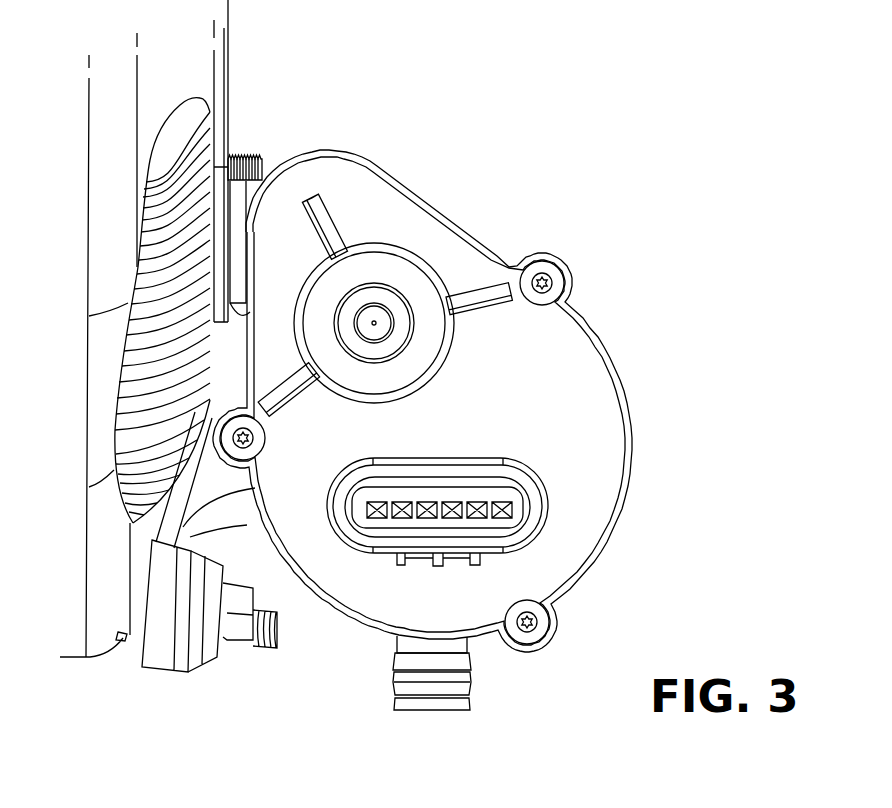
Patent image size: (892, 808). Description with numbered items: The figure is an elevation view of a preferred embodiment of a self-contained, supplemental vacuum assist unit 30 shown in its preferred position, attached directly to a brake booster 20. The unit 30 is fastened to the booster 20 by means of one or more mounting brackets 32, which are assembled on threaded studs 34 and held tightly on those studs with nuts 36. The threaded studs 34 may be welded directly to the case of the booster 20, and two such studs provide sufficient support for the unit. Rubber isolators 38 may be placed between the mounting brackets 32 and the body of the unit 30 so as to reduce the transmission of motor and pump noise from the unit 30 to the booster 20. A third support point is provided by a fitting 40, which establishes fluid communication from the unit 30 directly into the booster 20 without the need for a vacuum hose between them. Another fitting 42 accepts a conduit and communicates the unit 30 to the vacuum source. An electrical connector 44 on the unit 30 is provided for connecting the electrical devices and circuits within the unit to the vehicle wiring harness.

The booster 20 is at (228, 80).
The vacuum assist unit 30 is at (598, 337).
The mounting bracket 32 is at (247, 519).
The threaded stud 34 is at (270, 638).
The nut 36 is at (228, 645).
The rubber isolator 38 is at (137, 640).
The fitting 40 is at (250, 290).
The fitting 42 is at (470, 674).
The electrical connector 44 is at (503, 497).